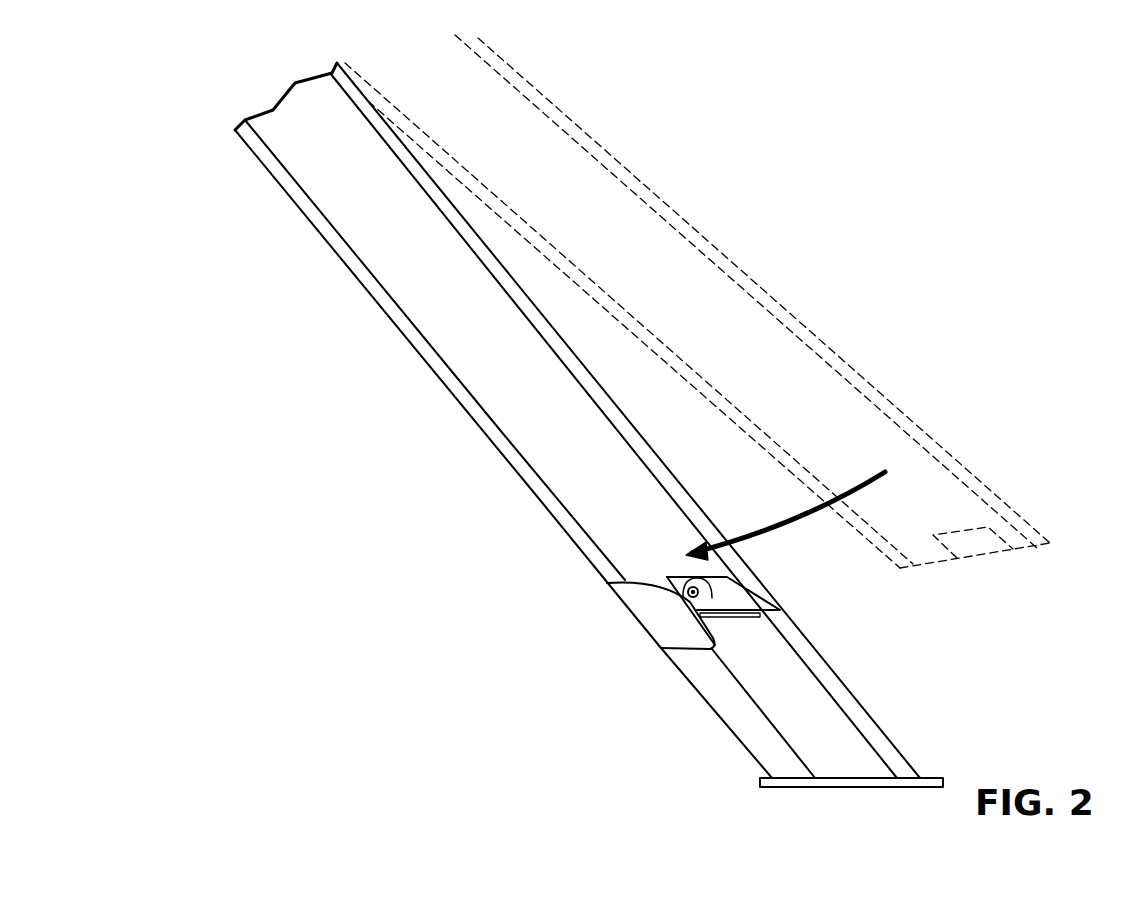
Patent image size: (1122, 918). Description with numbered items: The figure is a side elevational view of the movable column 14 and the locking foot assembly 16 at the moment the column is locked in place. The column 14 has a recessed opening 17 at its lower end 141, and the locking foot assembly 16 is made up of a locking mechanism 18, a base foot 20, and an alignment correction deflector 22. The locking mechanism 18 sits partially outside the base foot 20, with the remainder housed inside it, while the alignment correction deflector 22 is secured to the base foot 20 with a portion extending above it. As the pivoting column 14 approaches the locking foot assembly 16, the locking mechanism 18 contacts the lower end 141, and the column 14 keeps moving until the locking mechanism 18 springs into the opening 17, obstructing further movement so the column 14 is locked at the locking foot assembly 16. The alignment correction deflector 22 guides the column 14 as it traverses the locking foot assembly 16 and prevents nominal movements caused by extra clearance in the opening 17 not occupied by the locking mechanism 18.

The movable column 14 is at (490, 443).
The lower end 141 is at (588, 560).
The locking foot assembly 16 is at (668, 759).
The recessed opening 17 is at (713, 576).
The locking mechanism 18 is at (712, 602).
The base foot 20 is at (870, 712).
The alignment correction deflector 22 is at (660, 628).